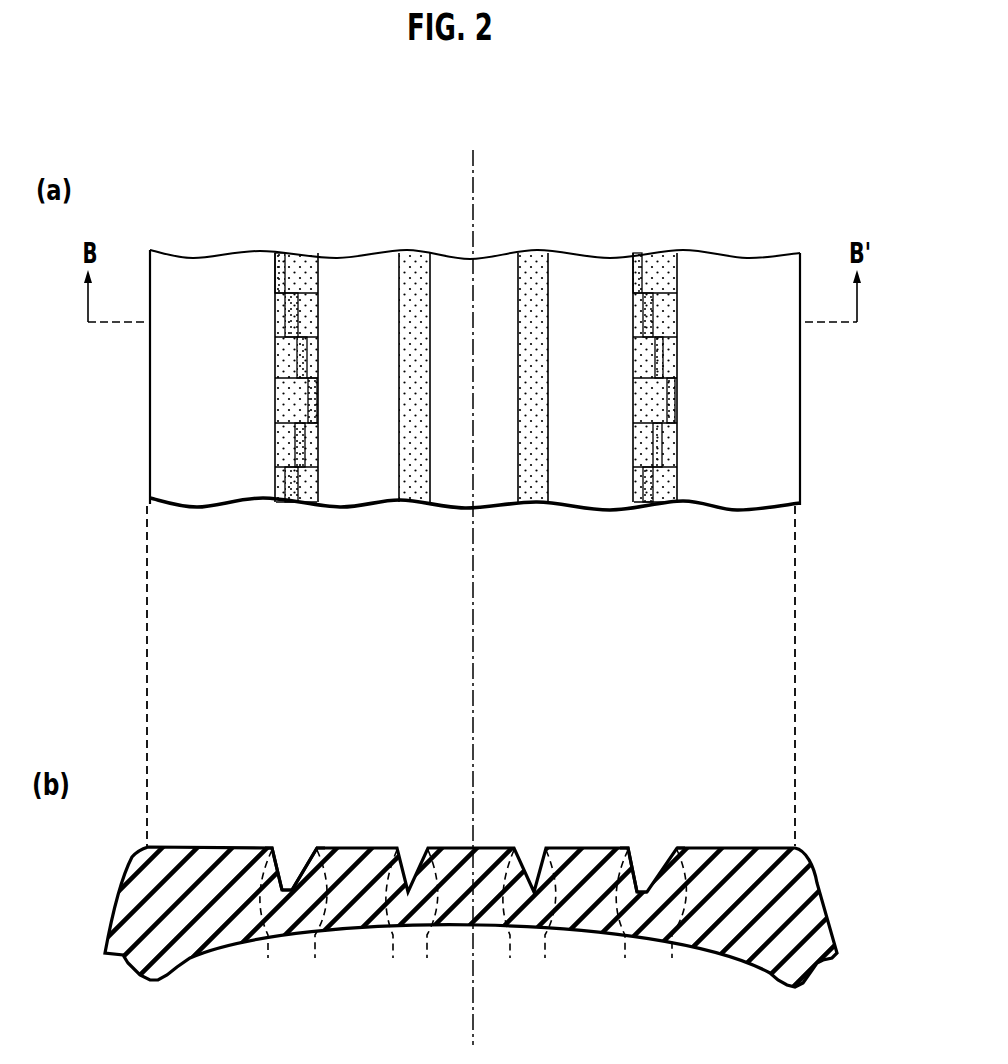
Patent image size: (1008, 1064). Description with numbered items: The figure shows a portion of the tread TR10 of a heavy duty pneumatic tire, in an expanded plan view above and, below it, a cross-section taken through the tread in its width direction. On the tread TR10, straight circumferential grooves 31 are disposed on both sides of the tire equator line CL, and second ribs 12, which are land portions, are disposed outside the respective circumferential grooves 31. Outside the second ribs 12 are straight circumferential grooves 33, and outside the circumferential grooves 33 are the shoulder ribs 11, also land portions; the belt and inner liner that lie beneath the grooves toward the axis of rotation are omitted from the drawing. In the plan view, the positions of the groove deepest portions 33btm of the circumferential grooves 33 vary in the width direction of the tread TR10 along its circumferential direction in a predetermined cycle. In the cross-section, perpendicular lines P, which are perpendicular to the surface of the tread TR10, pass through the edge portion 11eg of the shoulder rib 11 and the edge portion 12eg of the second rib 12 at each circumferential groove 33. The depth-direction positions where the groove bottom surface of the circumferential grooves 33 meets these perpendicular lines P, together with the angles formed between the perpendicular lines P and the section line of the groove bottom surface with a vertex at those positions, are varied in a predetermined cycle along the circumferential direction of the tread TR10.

The tread TR10 is at (622, 187).
The tire equator line CL is at (472, 167).
The shoulder rib 11 is at (217, 263).
The second rib 12 is at (358, 263).
The circumferential groove 31 is at (417, 263).
The circumferential groove 33 is at (298, 262).
The groove deepest portion 33btm is at (289, 505).
The edge portion 11eg is at (270, 846).
The edge portion 12eg is at (318, 846).
The perpendicular line P is at (473, 918).